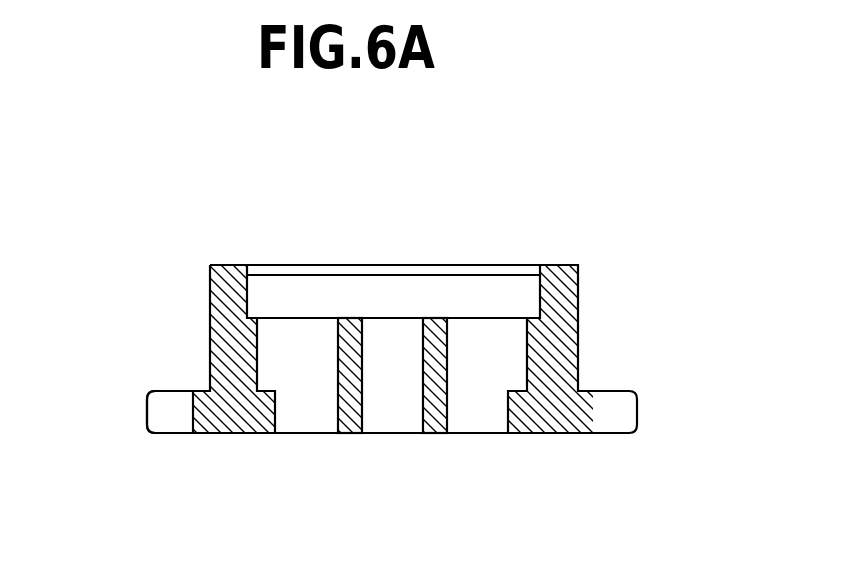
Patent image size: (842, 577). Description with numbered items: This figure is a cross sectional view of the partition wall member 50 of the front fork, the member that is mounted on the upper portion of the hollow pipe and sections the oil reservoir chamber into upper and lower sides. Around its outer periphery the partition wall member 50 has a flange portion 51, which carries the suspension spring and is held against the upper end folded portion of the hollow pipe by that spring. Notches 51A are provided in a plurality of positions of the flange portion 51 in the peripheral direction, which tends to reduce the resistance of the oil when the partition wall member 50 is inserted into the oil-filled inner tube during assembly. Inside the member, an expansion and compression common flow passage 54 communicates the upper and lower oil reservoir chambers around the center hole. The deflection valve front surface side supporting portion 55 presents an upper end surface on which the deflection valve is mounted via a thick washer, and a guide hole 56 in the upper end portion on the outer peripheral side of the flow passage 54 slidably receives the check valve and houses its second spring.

The partition wall member 50 is at (193, 334).
The flange portion 51 is at (167, 434).
The notches 51A is at (160, 415).
The expansion and compression common flow passage 54 is at (278, 417).
The deflection valve front surface side supporting portion 55 is at (363, 328).
The guide hole 56 is at (247, 290).